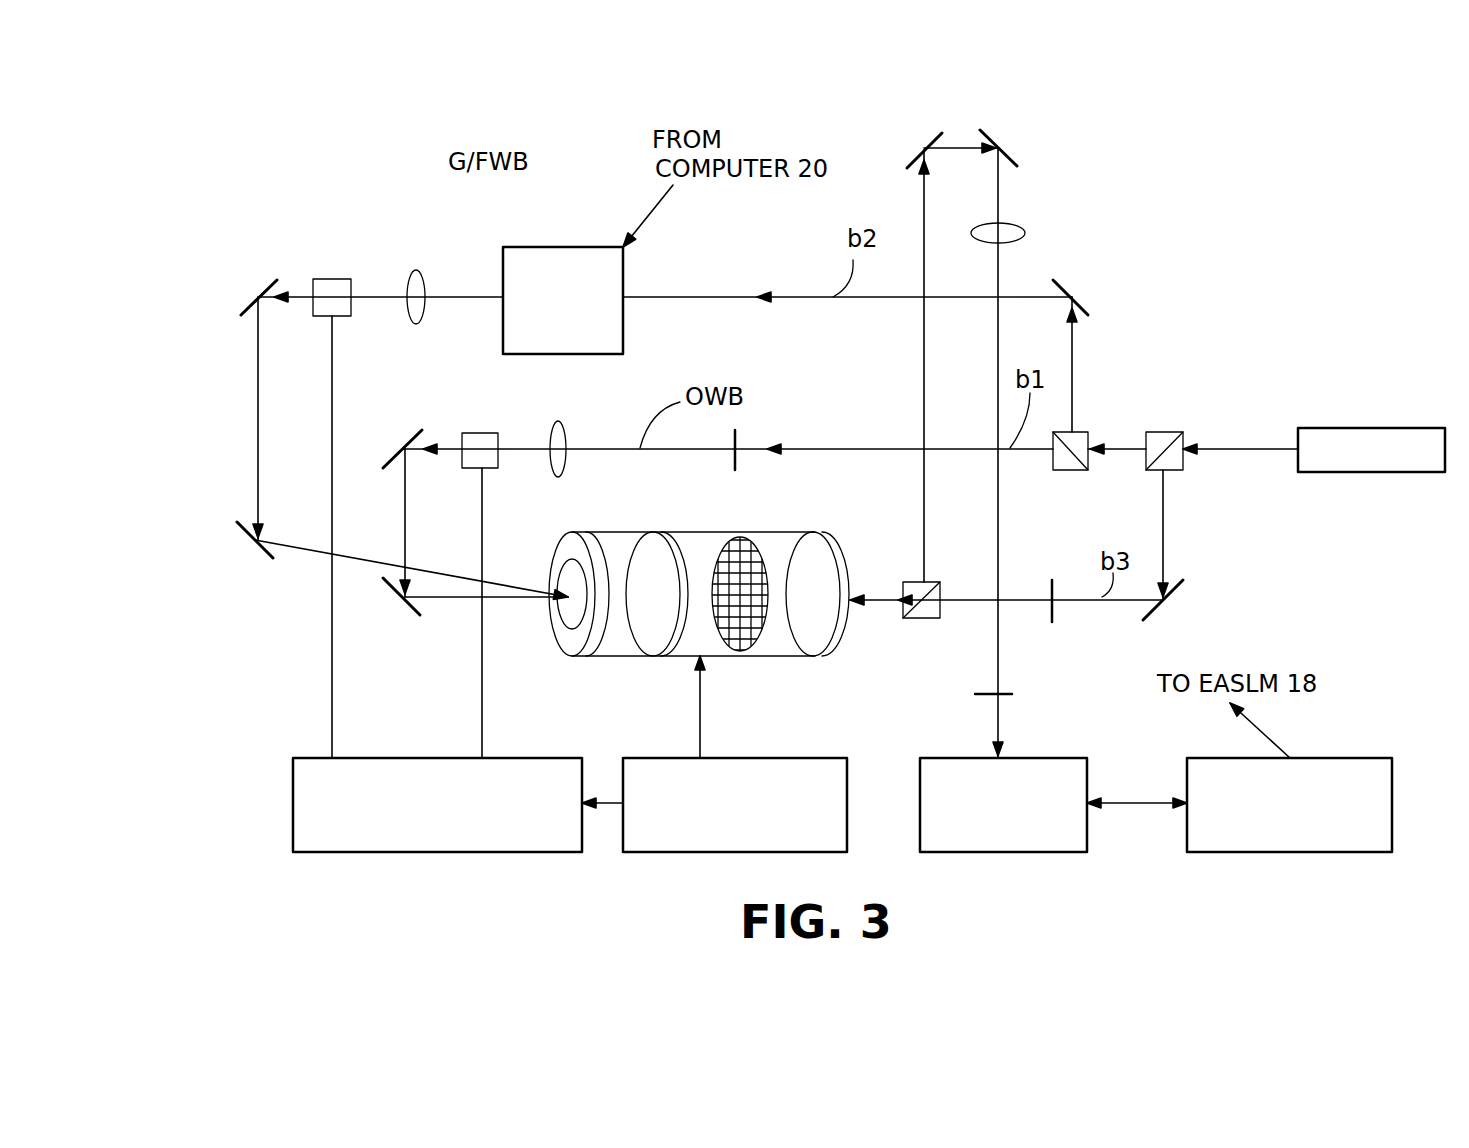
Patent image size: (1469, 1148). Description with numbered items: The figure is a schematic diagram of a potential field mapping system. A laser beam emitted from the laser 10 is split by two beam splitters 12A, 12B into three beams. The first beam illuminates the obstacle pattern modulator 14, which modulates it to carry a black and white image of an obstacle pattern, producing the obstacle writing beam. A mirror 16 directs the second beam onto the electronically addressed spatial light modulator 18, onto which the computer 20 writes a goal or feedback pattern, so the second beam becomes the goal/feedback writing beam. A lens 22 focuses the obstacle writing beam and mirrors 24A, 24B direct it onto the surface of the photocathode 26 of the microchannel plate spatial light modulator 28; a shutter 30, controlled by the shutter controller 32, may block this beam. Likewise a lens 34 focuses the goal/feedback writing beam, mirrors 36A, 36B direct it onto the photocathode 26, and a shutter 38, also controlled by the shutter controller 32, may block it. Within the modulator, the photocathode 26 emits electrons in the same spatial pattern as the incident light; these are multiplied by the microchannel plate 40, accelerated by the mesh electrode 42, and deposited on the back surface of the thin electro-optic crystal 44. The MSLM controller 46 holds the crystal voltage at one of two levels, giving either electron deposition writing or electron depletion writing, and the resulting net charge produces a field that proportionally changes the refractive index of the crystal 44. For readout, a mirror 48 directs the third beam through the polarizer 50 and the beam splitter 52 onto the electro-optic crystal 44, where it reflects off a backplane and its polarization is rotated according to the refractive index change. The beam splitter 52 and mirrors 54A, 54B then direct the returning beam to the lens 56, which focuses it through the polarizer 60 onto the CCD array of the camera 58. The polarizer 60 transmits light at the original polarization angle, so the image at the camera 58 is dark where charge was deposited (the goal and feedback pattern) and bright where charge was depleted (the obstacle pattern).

The laser 10 is at (1405, 437).
The beam splitter 12A is at (1167, 432).
The beam splitter 12B is at (1063, 470).
The obstacle pattern modulator 14 is at (737, 440).
The mirror 16 is at (1075, 283).
The electronically addressed spatial light modulator 18 is at (623, 333).
The computer 20 is at (1342, 758).
The lens 22 is at (562, 423).
The mirror 24A is at (413, 432).
The mirror 24B is at (420, 615).
The photocathode 26 is at (592, 648).
The microchannel plate spatial light modulator 28 is at (693, 577).
The shutter 30 is at (498, 432).
The shutter controller 32 is at (385, 758).
The lens 34 is at (418, 272).
The mirror 36A is at (273, 280).
The mirror 36B is at (268, 557).
The shutter 38 is at (338, 278).
The microchannel plate 40 is at (673, 653).
The mesh electrode 42 is at (752, 655).
The electro-optic crystal 44 is at (840, 637).
The MSLM controller 46 is at (788, 758).
The mirror 48 is at (1153, 615).
The polarizer 50 is at (1057, 613).
The beam splitter 52 is at (933, 622).
The mirror 54A is at (932, 135).
The mirror 54B is at (992, 135).
The lens 56 is at (1025, 228).
The camera 58 is at (957, 765).
The polarizer 60 is at (1007, 695).